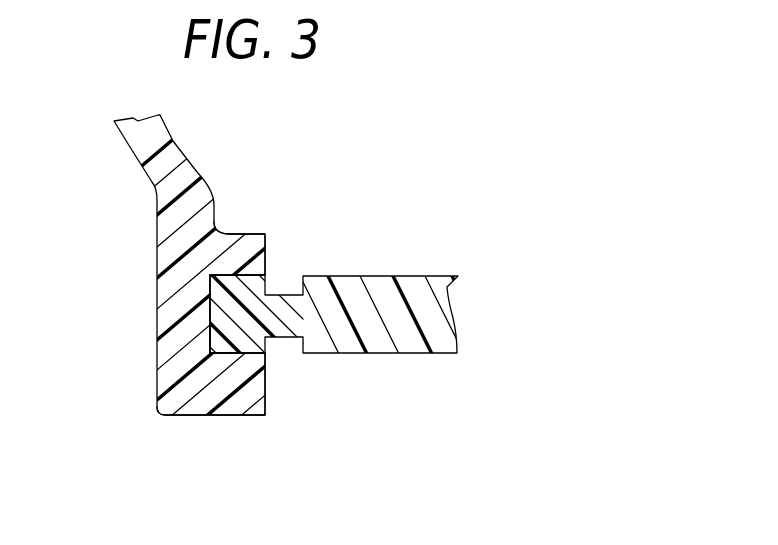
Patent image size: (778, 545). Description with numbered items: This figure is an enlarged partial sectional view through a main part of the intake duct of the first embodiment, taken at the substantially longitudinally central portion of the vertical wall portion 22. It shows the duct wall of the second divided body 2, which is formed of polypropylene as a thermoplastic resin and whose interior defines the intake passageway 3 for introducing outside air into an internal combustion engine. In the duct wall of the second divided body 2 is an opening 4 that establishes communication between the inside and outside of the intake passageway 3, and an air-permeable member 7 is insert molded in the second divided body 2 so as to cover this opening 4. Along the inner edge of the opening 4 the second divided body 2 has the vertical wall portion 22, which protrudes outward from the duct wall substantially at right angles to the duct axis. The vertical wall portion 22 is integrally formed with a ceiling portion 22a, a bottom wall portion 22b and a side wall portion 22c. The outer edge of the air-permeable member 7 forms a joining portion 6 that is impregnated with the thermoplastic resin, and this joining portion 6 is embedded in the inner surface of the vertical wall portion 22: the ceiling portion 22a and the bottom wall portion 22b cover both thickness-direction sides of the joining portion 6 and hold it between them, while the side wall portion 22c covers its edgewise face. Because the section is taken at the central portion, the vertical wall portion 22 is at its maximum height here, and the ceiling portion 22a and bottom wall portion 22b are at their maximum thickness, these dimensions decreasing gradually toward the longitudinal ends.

The second divided body 2 is at (157, 149).
The intake passageway 3 is at (372, 186).
The opening 4 is at (350, 380).
The joining portion 6 is at (224, 354).
The air-permeable member 7 is at (427, 352).
The vertical wall portion 22 is at (175, 334).
The ceiling portion 22a is at (235, 234).
The bottom wall portion 22b is at (248, 406).
The side wall portion 22c is at (182, 318).